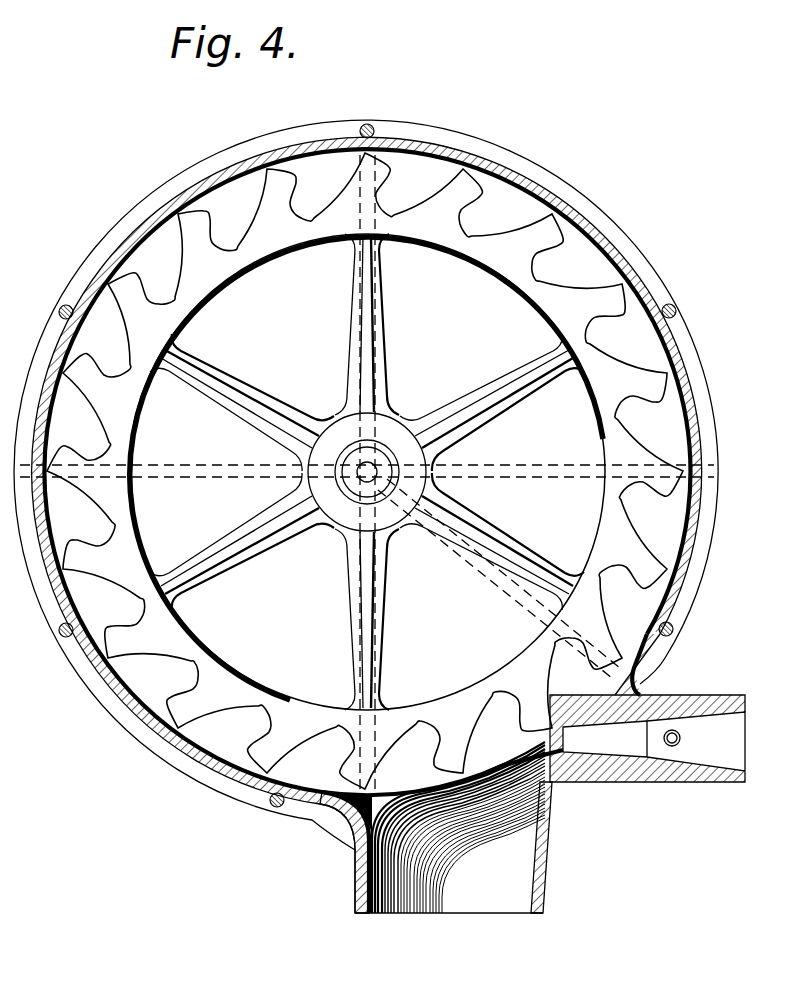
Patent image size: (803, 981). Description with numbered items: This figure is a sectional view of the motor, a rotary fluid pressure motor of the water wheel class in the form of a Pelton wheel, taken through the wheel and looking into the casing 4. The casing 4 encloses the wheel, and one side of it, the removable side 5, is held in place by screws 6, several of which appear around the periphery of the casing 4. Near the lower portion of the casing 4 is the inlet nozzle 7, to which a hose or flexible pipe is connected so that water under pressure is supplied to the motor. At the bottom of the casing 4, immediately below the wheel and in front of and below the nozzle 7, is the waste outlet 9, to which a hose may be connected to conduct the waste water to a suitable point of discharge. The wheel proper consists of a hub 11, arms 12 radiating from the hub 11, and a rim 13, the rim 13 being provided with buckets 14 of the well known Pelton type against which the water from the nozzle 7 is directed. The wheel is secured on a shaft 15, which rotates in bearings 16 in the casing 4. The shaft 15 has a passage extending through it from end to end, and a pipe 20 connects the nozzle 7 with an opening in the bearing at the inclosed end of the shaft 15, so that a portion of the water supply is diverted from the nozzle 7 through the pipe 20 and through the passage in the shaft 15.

The casing 4 is at (512, 172).
The removable side 5 is at (421, 126).
The screws 6 is at (370, 125).
The inlet nozzle 7 is at (680, 700).
The waste outlet 9 is at (508, 870).
The hub 11 is at (398, 426).
The arms 12 is at (492, 526).
The rim 13 is at (243, 268).
The buckets 14 is at (122, 652).
The shaft 15 is at (345, 500).
The bearings 16 is at (367, 464).
The pipe 20 is at (473, 569).